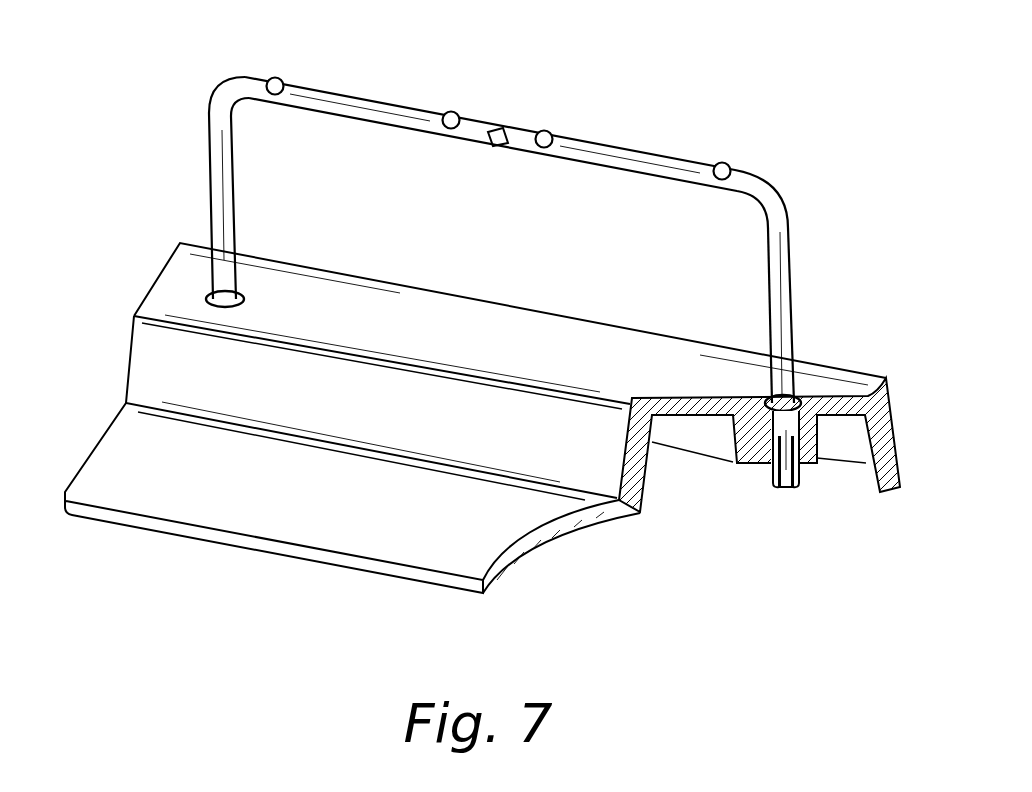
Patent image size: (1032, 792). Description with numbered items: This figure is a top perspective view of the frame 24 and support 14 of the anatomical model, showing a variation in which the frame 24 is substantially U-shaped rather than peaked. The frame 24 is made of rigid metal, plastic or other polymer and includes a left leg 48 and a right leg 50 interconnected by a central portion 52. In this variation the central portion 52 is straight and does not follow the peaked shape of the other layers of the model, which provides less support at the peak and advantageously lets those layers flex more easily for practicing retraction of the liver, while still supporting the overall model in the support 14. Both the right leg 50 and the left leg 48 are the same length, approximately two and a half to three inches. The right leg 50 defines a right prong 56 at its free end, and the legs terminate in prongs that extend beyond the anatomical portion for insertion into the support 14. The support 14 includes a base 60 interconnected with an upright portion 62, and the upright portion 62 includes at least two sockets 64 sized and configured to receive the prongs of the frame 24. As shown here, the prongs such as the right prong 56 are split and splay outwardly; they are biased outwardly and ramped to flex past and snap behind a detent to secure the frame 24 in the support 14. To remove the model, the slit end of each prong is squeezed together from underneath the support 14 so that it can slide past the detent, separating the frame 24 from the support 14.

The support 14 is at (850, 369).
The frame 24 is at (662, 162).
The left leg 48 is at (210, 173).
The right leg 50 is at (780, 267).
The central portion 52 is at (502, 128).
The right prong 56 is at (793, 457).
The base 60 is at (597, 520).
The upright portion 62 is at (127, 358).
The socket 64 is at (210, 293).